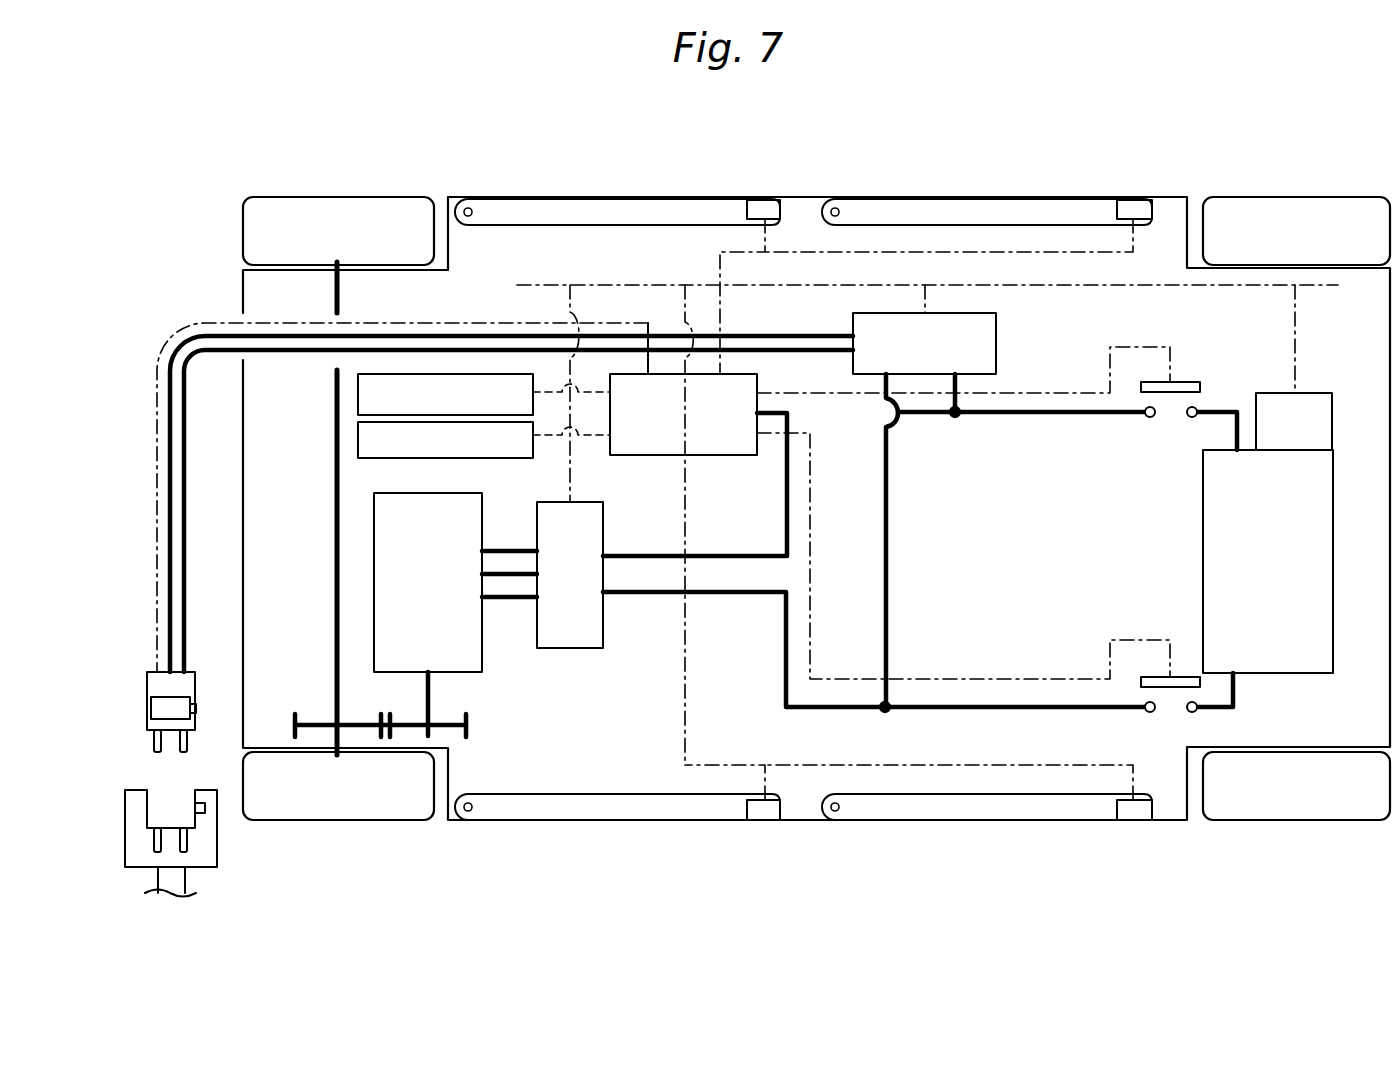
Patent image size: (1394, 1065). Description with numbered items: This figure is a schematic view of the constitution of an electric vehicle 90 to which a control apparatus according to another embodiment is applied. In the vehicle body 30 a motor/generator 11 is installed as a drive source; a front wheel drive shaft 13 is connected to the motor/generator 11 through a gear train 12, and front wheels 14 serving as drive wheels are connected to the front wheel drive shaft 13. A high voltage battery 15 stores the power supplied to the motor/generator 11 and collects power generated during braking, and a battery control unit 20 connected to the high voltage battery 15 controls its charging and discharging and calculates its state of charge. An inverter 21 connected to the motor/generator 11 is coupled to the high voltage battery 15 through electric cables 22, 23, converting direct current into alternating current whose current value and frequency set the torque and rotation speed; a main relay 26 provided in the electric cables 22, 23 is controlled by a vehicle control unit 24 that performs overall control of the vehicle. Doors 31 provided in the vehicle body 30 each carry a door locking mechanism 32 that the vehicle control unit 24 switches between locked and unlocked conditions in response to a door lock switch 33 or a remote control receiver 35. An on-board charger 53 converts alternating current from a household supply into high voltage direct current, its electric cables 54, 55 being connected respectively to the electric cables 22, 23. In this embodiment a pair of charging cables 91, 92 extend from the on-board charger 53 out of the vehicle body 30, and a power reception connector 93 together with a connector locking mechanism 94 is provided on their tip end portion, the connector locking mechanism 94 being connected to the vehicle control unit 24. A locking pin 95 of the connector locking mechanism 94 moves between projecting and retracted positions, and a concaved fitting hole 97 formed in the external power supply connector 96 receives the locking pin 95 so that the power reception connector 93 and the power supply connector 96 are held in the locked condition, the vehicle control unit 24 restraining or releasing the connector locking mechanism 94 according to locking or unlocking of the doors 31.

The motor/generator 11 is at (485, 643).
The gear train 12 is at (475, 725).
The front wheel drive shaft 13 is at (336, 557).
The front wheels 14 is at (382, 197).
The high voltage battery 15 is at (1203, 540).
The battery control unit (BCU) 20 is at (1228, 290).
The inverter 21 is at (580, 650).
The electric cable 22 is at (1067, 414).
The electric cable 23 is at (1030, 712).
The vehicle control unit 24 is at (717, 456).
The main relay 26 is at (1184, 380).
The vehicle body 30 is at (815, 197).
The door 31 is at (590, 198).
The door locking mechanism 32 is at (763, 199).
The door lock switch 33 is at (510, 459).
The remote control receiver 35 is at (458, 373).
The on-board charger 53 is at (998, 337).
The electric cable 54 is at (963, 385).
The electric cable 55 is at (888, 572).
The electric vehicle 90 is at (1197, 174).
The charging cable 91 is at (160, 408).
The charging cable 92 is at (186, 407).
The power reception connector 93 is at (197, 682).
The connector locking mechanism 94 is at (165, 710).
The locking pin 95 is at (196, 710).
The power supply connector 96 is at (133, 818).
The fitting hole 97 is at (195, 803).